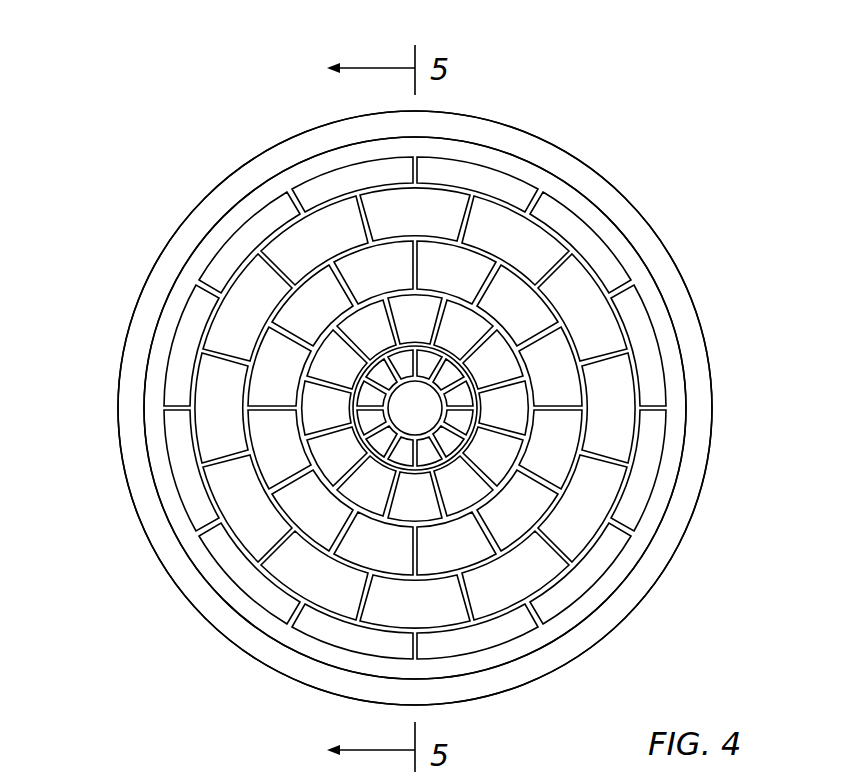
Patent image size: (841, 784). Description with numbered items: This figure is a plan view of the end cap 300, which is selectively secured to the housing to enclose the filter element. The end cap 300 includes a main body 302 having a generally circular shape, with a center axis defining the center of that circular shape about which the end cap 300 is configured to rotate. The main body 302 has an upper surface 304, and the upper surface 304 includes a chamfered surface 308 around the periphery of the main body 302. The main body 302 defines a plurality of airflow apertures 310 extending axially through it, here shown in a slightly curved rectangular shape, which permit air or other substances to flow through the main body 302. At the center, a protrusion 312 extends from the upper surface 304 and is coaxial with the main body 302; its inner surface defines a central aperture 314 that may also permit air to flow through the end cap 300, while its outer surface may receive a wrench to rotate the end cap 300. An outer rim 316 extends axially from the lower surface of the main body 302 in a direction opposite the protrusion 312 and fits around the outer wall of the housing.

The end cap 300 is at (171, 56).
The main body 302 is at (488, 158).
The upper surface 304 is at (563, 192).
The chamfered surface 308 is at (638, 237).
The airflow apertures 310 is at (215, 447).
The protrusion 312 is at (403, 370).
The central aperture 314 is at (405, 410).
The outer rim 316 is at (703, 294).